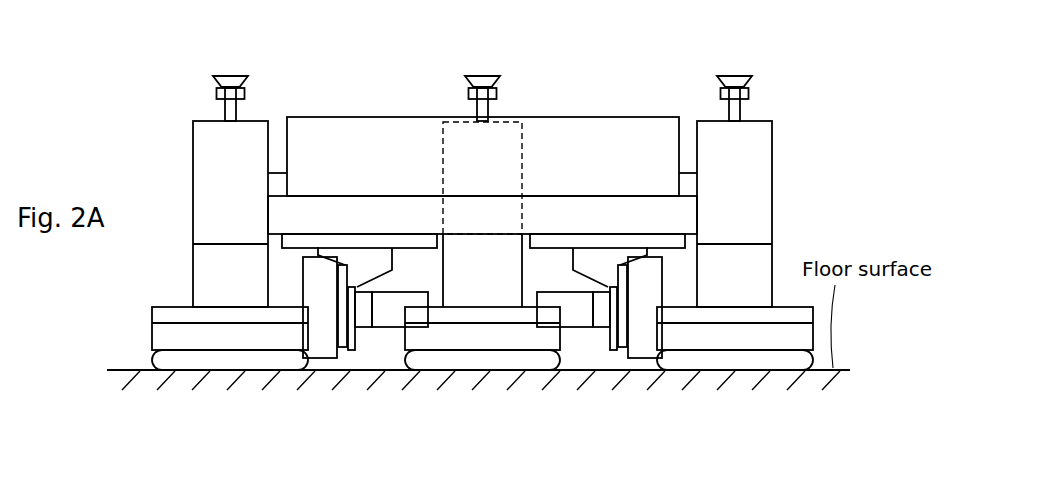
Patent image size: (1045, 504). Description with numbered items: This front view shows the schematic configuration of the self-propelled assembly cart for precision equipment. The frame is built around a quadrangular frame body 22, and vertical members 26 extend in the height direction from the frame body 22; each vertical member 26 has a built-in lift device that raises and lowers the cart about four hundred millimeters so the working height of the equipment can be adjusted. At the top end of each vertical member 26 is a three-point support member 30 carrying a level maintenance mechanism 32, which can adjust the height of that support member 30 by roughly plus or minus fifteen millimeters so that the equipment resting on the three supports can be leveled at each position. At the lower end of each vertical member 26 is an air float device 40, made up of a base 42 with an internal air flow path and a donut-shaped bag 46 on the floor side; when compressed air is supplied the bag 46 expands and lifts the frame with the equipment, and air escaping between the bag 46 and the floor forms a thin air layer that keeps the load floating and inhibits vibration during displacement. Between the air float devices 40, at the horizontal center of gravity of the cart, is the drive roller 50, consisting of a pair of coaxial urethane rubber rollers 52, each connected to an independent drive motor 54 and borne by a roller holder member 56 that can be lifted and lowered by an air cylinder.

The frame body 22 is at (604, 215).
The vertical member 26 is at (207, 163).
The support member 30 is at (520, 64).
The level maintenance mechanism 32 is at (750, 94).
The air float device 40 is at (452, 343).
The base 42 is at (167, 335).
The donut-shaped bag 46 is at (222, 362).
The drive roller 50 is at (495, 342).
The roller 52 is at (322, 348).
The drive motor 54 is at (386, 320).
The roller holder member 56 is at (370, 272).